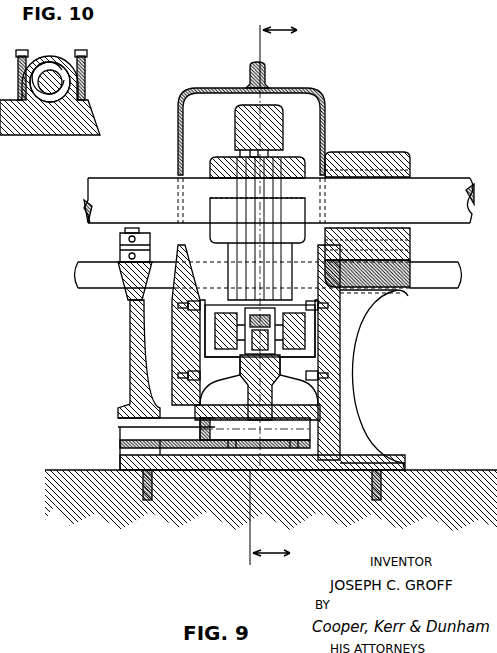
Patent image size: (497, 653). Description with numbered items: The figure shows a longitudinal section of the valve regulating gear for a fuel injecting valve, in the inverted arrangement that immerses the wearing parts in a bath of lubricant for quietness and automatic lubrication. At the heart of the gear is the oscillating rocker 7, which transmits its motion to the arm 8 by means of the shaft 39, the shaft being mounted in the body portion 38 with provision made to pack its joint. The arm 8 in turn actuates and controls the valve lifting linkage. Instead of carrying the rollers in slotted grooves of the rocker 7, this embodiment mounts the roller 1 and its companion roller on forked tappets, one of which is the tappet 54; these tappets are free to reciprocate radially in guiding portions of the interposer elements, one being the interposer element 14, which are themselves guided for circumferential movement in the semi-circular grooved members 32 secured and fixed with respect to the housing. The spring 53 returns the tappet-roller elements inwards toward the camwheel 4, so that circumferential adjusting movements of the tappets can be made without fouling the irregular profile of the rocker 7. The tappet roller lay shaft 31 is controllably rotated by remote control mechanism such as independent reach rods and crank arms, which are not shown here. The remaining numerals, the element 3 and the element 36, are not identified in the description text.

In FIG. 9, the roller 1 is at (340, 322).
In FIG. 9, the shaft 3 is at (440, 190).
In FIG. 9, the camwheel 4 is at (283, 122).
In FIG. 9, the rocker 7 is at (265, 397).
In FIG. 10, the arm 8 is at (66, 47).
In FIG. 9, the arm 8 is at (130, 352).
In FIG. 9, the interposer element 14 is at (205, 328).
In FIG. 9, the tappet roller lay shaft 31 is at (442, 288).
In FIG. 9, the semi-circular grooved member 32 is at (188, 306).
In FIG. 10, the bearing bushing 36 is at (63, 56).
In FIG. 9, the body portion 38 is at (340, 410).
In FIG. 9, the shaft 39 is at (135, 433).
In FIG. 9, the spring 53 is at (200, 350).
In FIG. 9, the forked tappet 54 is at (340, 362).